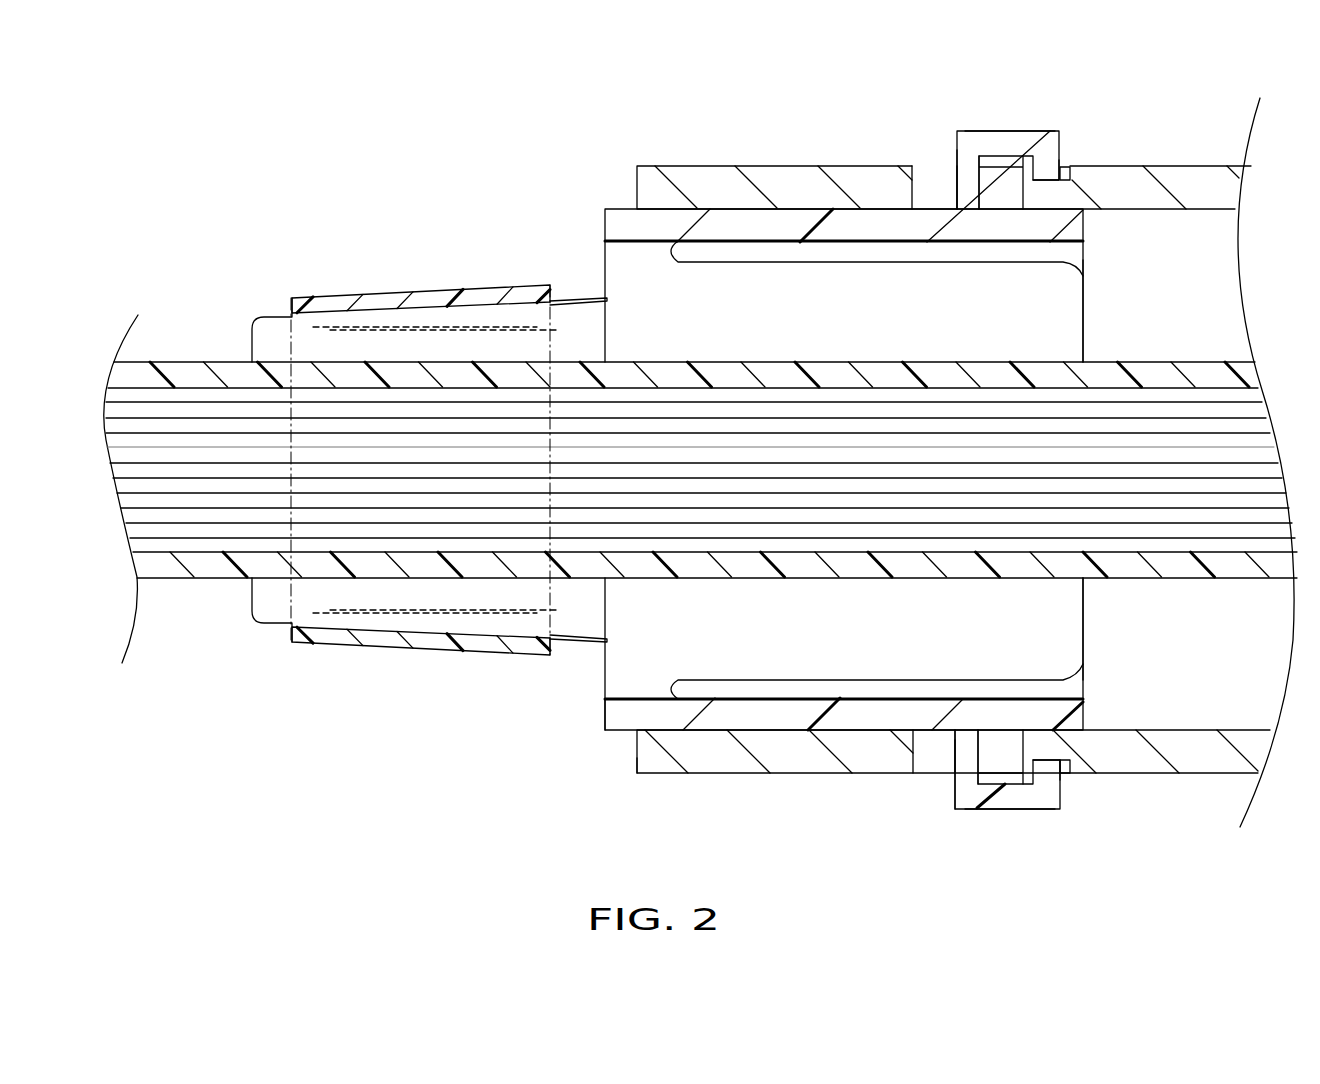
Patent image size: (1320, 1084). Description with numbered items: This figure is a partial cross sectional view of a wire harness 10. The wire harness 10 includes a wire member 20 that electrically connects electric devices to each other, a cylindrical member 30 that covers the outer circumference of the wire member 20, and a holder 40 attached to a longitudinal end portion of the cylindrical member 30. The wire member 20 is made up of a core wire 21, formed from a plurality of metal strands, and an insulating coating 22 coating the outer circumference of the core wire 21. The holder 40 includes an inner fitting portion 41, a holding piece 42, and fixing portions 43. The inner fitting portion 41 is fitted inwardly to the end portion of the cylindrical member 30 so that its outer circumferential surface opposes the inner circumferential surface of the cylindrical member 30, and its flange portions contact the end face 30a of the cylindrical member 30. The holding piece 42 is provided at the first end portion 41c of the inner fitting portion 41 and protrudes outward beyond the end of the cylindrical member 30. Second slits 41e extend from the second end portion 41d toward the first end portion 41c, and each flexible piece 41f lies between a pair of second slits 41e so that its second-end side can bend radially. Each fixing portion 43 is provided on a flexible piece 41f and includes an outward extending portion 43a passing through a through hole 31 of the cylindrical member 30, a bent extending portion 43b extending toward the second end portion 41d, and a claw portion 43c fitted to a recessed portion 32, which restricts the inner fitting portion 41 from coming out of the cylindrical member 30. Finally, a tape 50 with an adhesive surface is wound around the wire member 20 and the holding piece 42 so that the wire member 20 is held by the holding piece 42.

The wire harness 10 is at (680, 133).
The wire member 20 is at (1152, 360).
The core wire 21 is at (722, 425).
The insulating coating 22 is at (770, 361).
The cylindrical member 30 is at (1168, 165).
The end face 30a is at (637, 755).
The through hole 31 is at (927, 180).
The recessed portion 32 is at (1062, 167).
The holder 40 is at (717, 209).
The inner fitting portion 41 is at (788, 275).
The first end portion 41c is at (605, 713).
The second end portion 41d is at (1083, 712).
The second slit 41e is at (894, 263).
The flexible piece 41f is at (996, 230).
The holding piece 42 is at (423, 316).
The fixing portion 43 is at (1045, 128).
The outward extending portion 43a is at (960, 182).
The bent extending portion 43b is at (998, 136).
The claw portion 43c is at (1041, 181).
The tape 50 is at (385, 655).